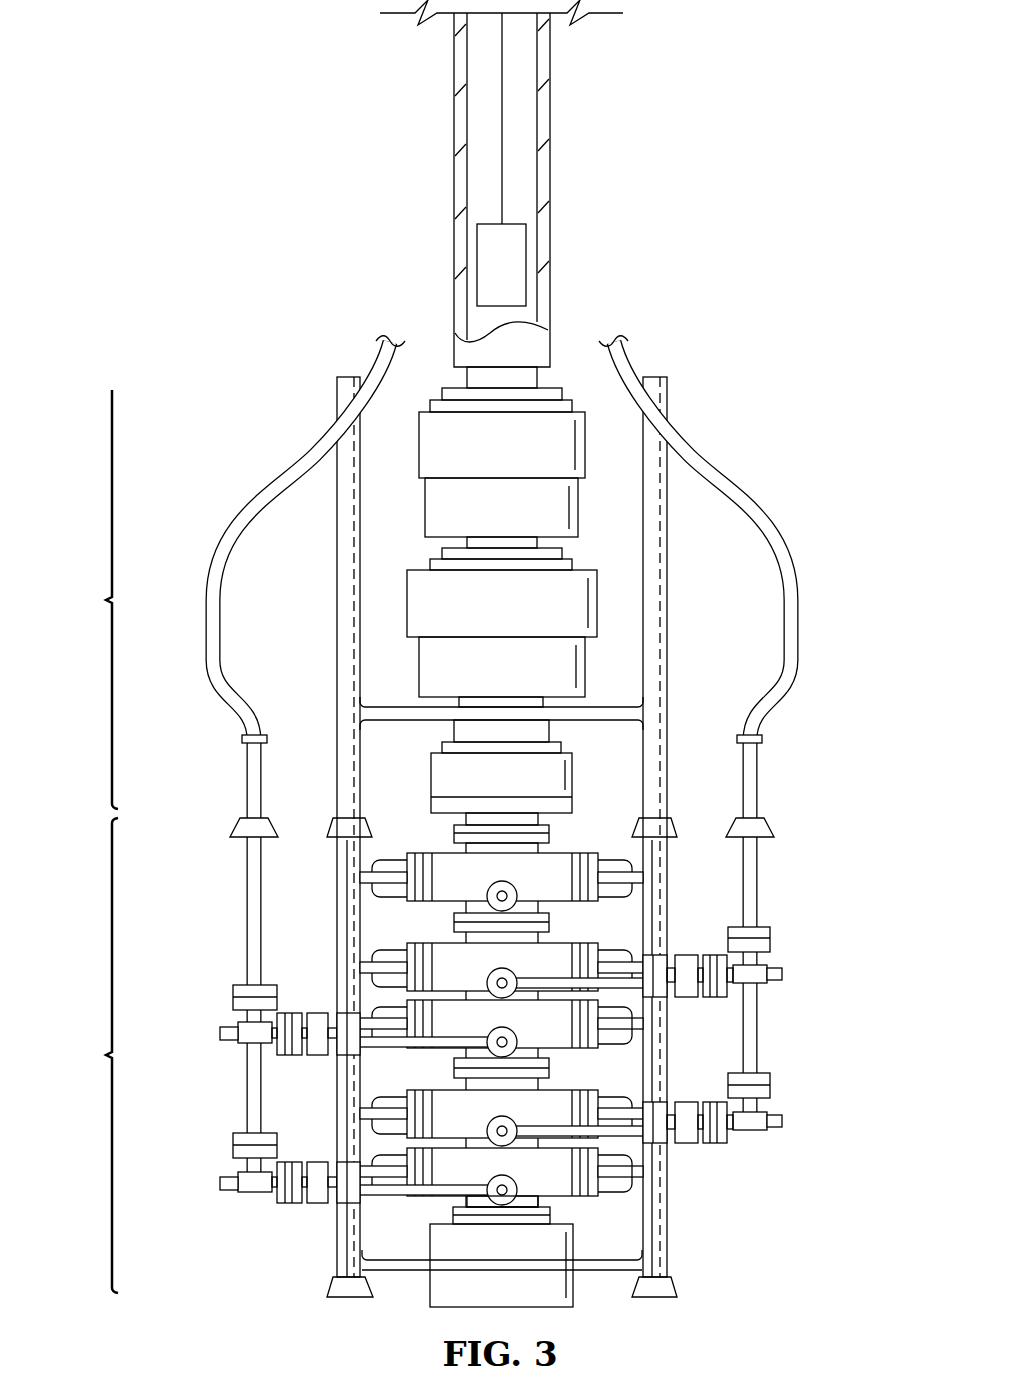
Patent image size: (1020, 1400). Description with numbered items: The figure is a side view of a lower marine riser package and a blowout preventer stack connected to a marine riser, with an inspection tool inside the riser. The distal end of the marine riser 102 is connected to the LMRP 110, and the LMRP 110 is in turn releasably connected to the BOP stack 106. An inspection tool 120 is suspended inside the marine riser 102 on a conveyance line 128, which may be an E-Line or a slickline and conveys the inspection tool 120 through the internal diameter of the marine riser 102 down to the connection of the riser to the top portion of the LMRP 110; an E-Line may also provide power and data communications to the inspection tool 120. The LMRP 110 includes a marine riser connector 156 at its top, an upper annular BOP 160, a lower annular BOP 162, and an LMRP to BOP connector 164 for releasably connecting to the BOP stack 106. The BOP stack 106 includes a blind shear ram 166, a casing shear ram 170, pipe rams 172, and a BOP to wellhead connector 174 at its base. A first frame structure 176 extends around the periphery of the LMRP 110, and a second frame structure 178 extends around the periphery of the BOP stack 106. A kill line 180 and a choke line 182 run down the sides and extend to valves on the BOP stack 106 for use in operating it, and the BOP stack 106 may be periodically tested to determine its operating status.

The marine riser 102 is at (458, 122).
The conveyance line 128 is at (500, 73).
The inspection tool 120 is at (487, 265).
The marine riser connector 156 is at (527, 378).
The upper annular BOP 160 is at (425, 445).
The lower annular BOP 162 is at (410, 601).
The LMRP to BOP connector 164 is at (437, 773).
The blind shear ram 166 is at (610, 858).
The casing shear ram 170 is at (395, 942).
The pipe rams 172 is at (606, 1046).
The BOP to wellhead connector 174 is at (440, 1243).
The first frame structure 176 is at (657, 627).
The second frame structure 178 is at (660, 1240).
The kill line 180 is at (212, 600).
The choke line 182 is at (793, 607).
The LMRP 110 is at (85, 599).
The BOP stack 106 is at (85, 1055).